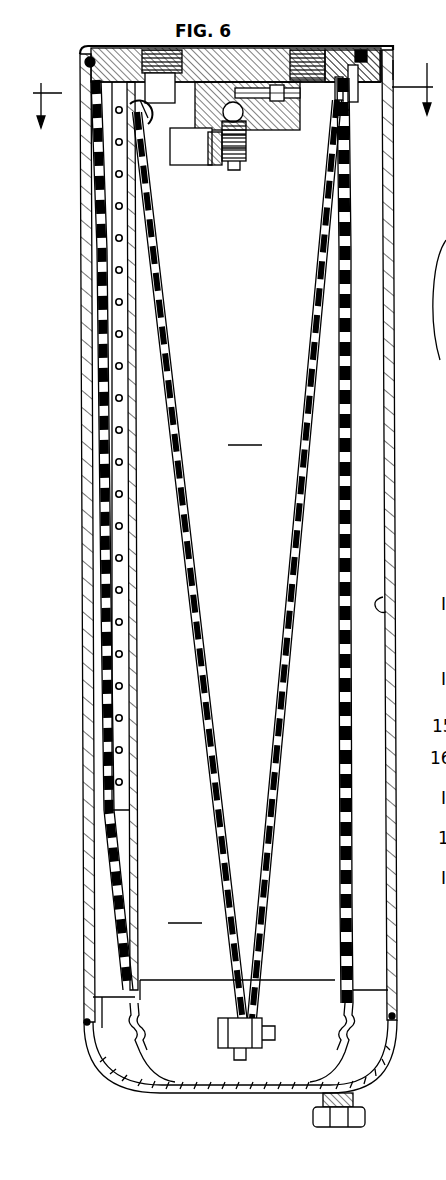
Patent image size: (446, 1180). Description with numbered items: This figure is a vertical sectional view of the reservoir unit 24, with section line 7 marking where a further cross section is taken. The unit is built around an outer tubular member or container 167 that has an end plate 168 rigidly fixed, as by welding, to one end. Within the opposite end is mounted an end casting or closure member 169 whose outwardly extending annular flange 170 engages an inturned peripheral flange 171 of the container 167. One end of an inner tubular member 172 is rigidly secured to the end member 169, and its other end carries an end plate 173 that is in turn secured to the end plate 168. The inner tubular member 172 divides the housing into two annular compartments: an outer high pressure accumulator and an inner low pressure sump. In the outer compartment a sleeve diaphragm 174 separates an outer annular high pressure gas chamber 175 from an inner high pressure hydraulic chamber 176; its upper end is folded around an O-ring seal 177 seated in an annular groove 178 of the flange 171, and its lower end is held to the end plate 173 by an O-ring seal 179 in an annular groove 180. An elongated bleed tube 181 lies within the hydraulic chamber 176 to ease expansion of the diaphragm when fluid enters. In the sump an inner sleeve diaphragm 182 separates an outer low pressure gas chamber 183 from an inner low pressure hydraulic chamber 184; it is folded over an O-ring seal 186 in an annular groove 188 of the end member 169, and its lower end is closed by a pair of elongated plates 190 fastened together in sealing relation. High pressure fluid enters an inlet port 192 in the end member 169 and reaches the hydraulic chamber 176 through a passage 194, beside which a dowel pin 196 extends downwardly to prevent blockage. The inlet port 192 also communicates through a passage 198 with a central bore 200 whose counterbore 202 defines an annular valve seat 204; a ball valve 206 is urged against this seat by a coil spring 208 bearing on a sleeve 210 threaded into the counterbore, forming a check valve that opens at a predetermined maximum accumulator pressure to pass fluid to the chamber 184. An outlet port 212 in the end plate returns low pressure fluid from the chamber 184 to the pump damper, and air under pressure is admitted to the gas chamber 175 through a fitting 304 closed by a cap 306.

The section line 7- 7 is at (233, 87).
The reservoir unit 24 is at (395, 68).
The outer tubular member or container 167 is at (88, 650).
The end plate 168 is at (386, 1070).
The end casting or closure member 169 is at (205, 132).
The annular flange 170 is at (125, 78).
The inturned peripheral flange 171 is at (376, 48).
The inner tubular member 172 is at (133, 352).
The end plate 173 is at (302, 980).
The sleeve diaphragm 174 is at (108, 515).
The high pressure gas chamber 175 is at (385, 622).
The high pressure hydraulic chamber 176 is at (127, 530).
The O-ring seal 177 is at (86, 61).
The annular groove 178 is at (370, 62).
The O-ring seal 179 is at (103, 1067).
The annular groove 180 is at (343, 1032).
The bleed tube 181 is at (118, 380).
The inner sleeve diaphragm 182 is at (280, 745).
The low pressure gas chamber 183 is at (185, 913).
The low pressure hydraulic chamber 184 is at (245, 435).
The O-ring seal 186 is at (350, 110).
The annular groove 188 is at (148, 125).
The elongated plates 190 is at (222, 1045).
The inlet port 192 is at (283, 112).
The passage 194 is at (352, 100).
The dowel pin 196 is at (362, 95).
The passage 198 is at (280, 64).
The central bore 200 is at (240, 78).
The counterbore 202 is at (218, 168).
The annular valve seat 204 is at (236, 105).
The ball valve 206 is at (250, 128).
The coil spring 208 is at (252, 150).
The sleeve 210 is at (245, 168).
The outlet port 212 is at (135, 108).
The fitting 304 is at (323, 1100).
The cap 306 is at (346, 1126).